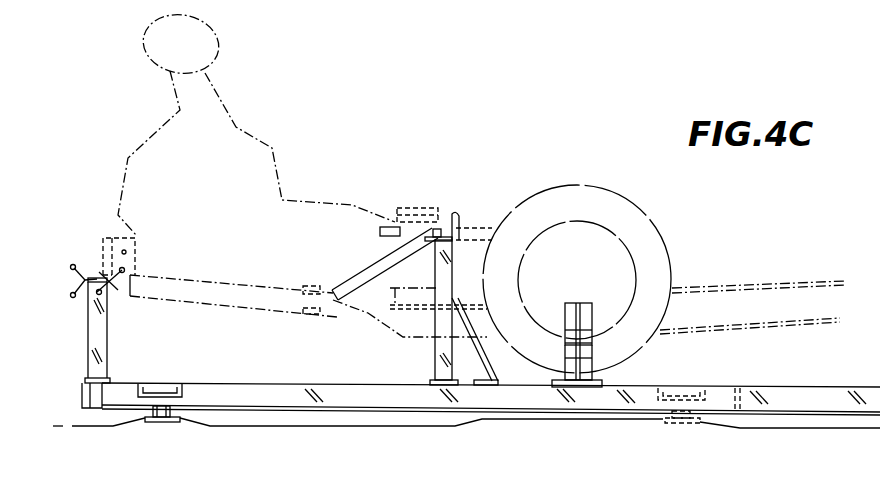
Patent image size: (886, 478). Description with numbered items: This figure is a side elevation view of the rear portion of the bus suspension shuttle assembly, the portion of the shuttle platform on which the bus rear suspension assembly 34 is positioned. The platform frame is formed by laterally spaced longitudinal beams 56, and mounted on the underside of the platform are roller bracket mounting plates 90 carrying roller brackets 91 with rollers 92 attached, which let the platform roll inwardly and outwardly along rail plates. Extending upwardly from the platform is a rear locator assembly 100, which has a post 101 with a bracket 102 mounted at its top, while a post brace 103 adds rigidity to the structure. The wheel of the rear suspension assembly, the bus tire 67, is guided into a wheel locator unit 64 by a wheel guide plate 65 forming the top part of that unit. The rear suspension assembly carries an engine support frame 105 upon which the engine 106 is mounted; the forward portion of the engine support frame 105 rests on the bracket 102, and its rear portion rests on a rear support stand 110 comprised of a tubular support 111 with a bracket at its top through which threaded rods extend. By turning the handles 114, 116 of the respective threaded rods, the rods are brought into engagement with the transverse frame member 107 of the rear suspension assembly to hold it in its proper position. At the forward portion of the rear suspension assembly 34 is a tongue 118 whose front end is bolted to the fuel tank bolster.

The bus rear suspension assembly 34 is at (692, 224).
The longitudinal beam 56 is at (775, 397).
The wheel locator unit 64 is at (598, 345).
The wheel guide plate 65 is at (580, 303).
The bus tire 67 is at (617, 197).
The roller bracket mounting plate 90 is at (183, 385).
The roller bracket 91 is at (175, 411).
The roller 92 is at (163, 418).
The rear locator assembly 100 is at (434, 346).
The post 101 is at (437, 367).
The bracket 102 is at (452, 215).
The post brace 103 is at (496, 353).
The engine support frame 105 is at (255, 310).
The engine 106 is at (206, 154).
The transverse frame member 107 is at (118, 238).
The rear support stand 110 is at (82, 314).
The tubular support 111 is at (108, 356).
The handle 114 is at (108, 284).
The handle 116 is at (77, 276).
The tongue 118 is at (782, 313).